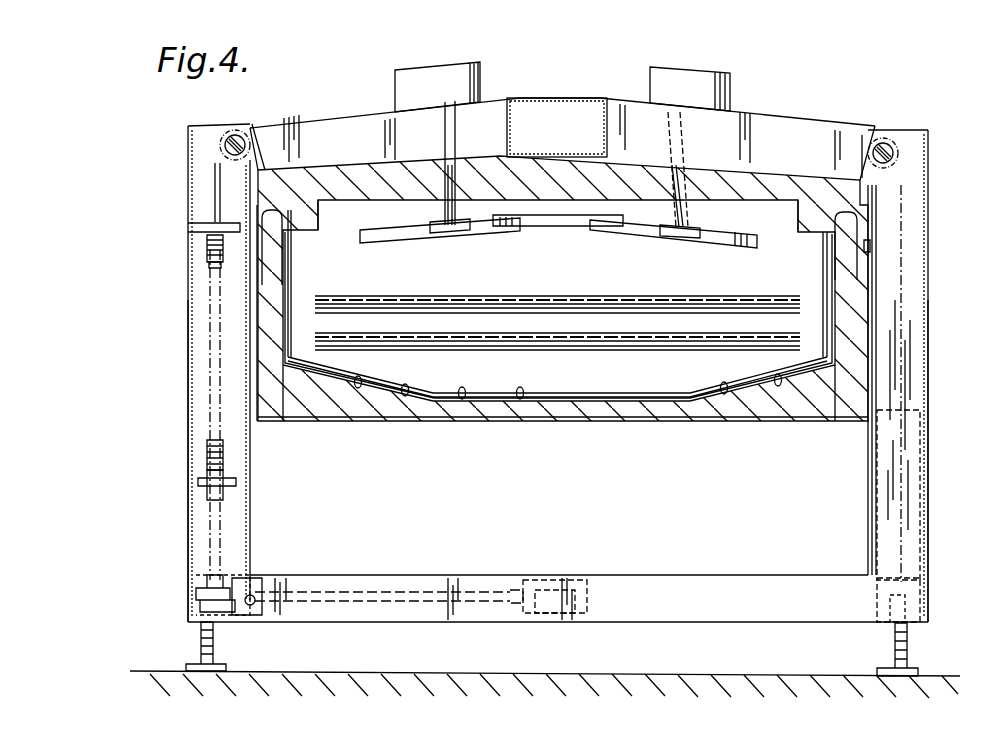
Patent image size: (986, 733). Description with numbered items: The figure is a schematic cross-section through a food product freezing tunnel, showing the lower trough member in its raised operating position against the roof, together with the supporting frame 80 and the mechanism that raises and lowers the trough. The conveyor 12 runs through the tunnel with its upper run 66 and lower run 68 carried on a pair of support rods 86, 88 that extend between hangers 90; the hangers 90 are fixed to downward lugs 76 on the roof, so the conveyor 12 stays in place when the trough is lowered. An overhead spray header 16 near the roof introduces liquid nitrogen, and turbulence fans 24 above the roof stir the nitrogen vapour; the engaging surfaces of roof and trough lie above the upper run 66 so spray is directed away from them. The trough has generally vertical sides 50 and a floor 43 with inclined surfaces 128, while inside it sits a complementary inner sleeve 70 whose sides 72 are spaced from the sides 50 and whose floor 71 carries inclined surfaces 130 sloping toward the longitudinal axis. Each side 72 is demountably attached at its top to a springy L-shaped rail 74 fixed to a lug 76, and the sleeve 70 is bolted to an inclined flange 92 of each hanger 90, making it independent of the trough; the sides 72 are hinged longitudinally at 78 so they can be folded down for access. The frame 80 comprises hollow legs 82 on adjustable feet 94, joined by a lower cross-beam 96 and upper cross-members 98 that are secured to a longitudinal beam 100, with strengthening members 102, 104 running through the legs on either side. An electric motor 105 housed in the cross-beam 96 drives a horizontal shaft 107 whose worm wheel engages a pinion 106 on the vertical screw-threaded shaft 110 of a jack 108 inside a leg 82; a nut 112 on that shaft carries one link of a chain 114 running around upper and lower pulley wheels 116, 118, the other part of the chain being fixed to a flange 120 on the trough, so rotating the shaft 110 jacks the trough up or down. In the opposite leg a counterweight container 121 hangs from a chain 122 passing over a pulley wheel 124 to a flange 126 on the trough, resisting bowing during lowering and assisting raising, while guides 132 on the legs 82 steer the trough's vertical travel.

The food product conveyor 12 is at (634, 292).
The liquid nitrogen spray header 16 is at (565, 232).
The turbulence fans 24 is at (471, 70).
The floor of the trough section 43 is at (462, 399).
The sides of the trough member 50 is at (265, 300).
The upper run of the conveyor belt 66 is at (588, 297).
The lower run of the conveyor belt 68 is at (672, 346).
The inner trough or sleeve 70 is at (280, 328).
The floor of the sleeve 71 is at (520, 399).
The sides of the sleeve 72 is at (294, 327).
The L-shaped rail 74 is at (300, 228).
The downward projection or lug 76 is at (336, 205).
The hinge of the sleeve sides 78 is at (294, 365).
The frame 80 is at (935, 505).
The legs 82 is at (190, 522).
The conveyor belt support rod 86 is at (680, 308).
The conveyor belt support rod 88 is at (590, 347).
The hangers 90 is at (300, 282).
The inclined inwardly-extending flange 92 is at (320, 357).
The adjustable feet 94 is at (203, 640).
The lower cross-beam 96 is at (322, 573).
The upper cross-members 98 is at (495, 97).
The longitudinal beam 100 is at (553, 97).
The longitudinal strengthening member 102 is at (905, 597).
The longitudinal strengthening member 104 is at (231, 582).
The electric motor 105 is at (532, 578).
The pinion 106 is at (215, 590).
The horizontal shaft 107 is at (378, 590).
The jack means 108 is at (207, 288).
The vertical screw-threaded shaft 110 is at (208, 452).
The screw-threaded nut 112 is at (205, 485).
The chain 114 is at (215, 193).
The upper pulley wheel 116 is at (247, 128).
The lower pulley wheel 118 is at (252, 614).
The flange 120 is at (238, 240).
The hollow container 121 is at (922, 450).
The length of chain 122 is at (905, 383).
The pulley wheel 124 is at (890, 135).
The flange 126 is at (872, 243).
The inclined surfaces 128 is at (358, 388).
The inclined surfaces 130 is at (405, 396).
The guides 132 is at (225, 254).